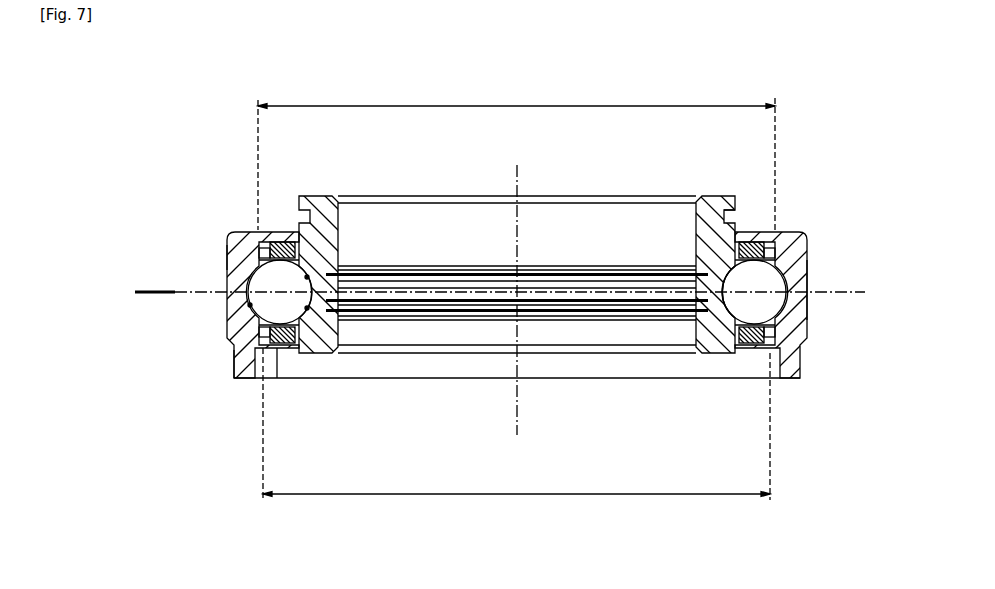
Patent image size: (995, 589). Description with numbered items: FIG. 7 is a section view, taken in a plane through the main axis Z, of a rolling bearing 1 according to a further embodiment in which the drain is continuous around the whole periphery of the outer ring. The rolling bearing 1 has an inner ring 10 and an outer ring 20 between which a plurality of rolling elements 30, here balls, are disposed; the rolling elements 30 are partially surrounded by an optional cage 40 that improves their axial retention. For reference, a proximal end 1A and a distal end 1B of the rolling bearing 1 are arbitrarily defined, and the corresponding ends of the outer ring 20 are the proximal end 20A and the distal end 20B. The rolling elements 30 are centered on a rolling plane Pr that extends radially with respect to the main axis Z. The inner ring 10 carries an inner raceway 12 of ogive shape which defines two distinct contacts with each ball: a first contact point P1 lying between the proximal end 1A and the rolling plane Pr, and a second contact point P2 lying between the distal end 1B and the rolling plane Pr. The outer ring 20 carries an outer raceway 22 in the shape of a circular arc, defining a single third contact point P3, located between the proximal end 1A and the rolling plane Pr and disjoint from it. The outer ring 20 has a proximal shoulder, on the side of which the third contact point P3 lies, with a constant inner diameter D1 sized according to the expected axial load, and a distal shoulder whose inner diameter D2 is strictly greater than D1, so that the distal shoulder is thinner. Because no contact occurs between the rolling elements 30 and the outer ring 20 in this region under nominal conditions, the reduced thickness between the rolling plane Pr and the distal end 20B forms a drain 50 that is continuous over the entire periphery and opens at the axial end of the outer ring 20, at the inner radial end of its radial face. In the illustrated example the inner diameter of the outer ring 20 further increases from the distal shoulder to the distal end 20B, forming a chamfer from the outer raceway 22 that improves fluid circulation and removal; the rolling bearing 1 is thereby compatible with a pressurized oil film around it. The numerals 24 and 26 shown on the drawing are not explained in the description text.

The rolling bearing 1 is at (809, 184).
The proximal end 1A is at (241, 381).
The distal end 1B is at (328, 197).
The inner ring 10 is at (716, 206).
The inner raceway 12 is at (730, 268).
The outer ring 20 is at (228, 274).
The proximal end of the outer ring 20A is at (787, 380).
The distal end of the outer ring 20B is at (722, 205).
The outer raceway 22 is at (784, 300).
The outer ring lower portion 24 is at (232, 347).
The outer ring upper portion 26 is at (232, 259).
The rolling elements 30 is at (773, 279).
The cage 40 is at (748, 240).
The drain 50 is at (254, 258).
The first contact point P1 is at (307, 308).
The second contact point P2 is at (307, 277).
The third contact point P3 is at (249, 305).
The rolling plane Pr is at (152, 290).
The main axis Z is at (517, 299).
The inner diameter of the proximal shoulder D1 is at (516, 424).
The inner diameter of the distal shoulder D2 is at (516, 157).